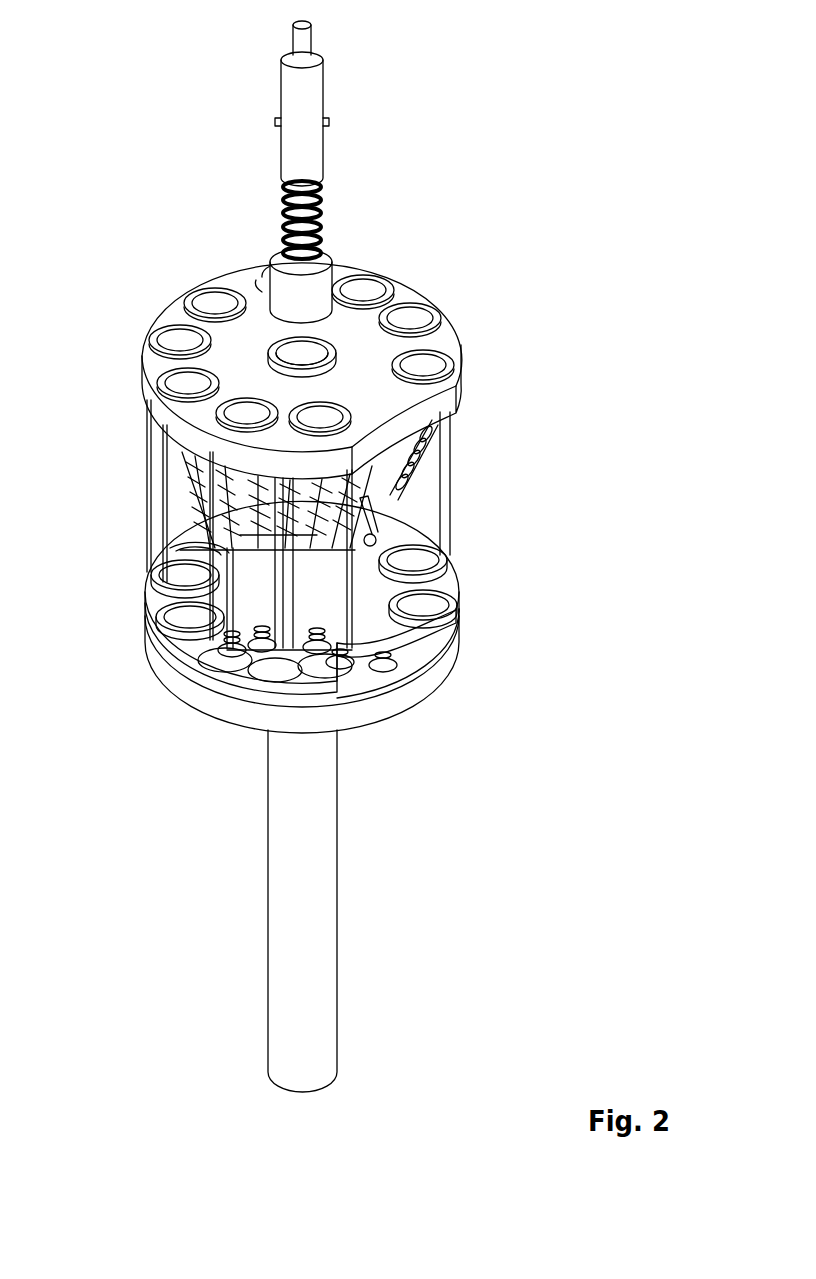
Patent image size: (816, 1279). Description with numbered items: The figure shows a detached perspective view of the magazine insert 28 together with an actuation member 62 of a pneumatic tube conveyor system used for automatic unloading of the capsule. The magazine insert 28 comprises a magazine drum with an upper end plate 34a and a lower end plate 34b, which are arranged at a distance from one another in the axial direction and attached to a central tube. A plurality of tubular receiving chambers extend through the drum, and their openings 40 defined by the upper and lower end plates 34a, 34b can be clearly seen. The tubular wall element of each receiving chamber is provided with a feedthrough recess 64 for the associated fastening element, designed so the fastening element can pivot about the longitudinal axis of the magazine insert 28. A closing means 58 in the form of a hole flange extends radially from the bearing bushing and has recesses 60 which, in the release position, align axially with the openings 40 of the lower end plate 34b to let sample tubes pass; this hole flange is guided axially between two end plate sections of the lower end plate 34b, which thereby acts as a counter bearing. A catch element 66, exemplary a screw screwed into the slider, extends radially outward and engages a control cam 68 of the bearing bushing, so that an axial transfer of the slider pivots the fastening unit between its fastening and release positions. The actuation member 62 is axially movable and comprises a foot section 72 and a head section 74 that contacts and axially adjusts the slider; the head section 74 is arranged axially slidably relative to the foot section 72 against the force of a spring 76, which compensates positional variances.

The magazine insert 28 is at (492, 190).
The upper end plate 34a is at (443, 404).
The lower end plate 34b is at (150, 605).
The second opening 40 is at (240, 420).
The closing means 58 is at (400, 686).
The recesses 60 is at (273, 633).
The actuation member 62 is at (278, 153).
The feedthrough recess 64 is at (252, 513).
The catch element 66 is at (378, 540).
The control cam 68 is at (400, 512).
The foot section 72 is at (314, 94).
The head section 74 is at (270, 277).
The spring 76 is at (320, 208).